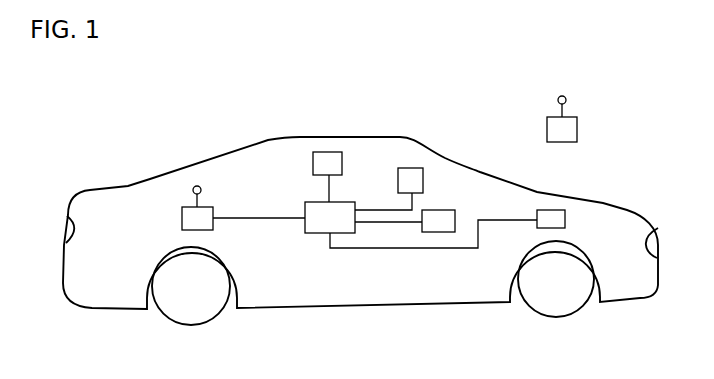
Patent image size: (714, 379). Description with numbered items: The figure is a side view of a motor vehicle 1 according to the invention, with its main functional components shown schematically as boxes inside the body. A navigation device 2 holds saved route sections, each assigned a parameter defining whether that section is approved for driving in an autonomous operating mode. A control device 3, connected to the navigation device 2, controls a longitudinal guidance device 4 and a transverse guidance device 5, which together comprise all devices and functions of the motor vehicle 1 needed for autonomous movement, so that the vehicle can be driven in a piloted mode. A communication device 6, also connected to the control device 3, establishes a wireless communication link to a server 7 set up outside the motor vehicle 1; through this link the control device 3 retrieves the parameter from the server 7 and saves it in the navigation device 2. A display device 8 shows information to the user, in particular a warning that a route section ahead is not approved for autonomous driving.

The motor vehicle 1 is at (154, 140).
The navigation device 2 is at (329, 152).
The control device 3 is at (318, 236).
The longitudinal guidance device 4 is at (446, 209).
The transverse guidance device 5 is at (552, 210).
The communication device 6 is at (182, 217).
The server 7 is at (578, 128).
The display device 8 is at (412, 168).